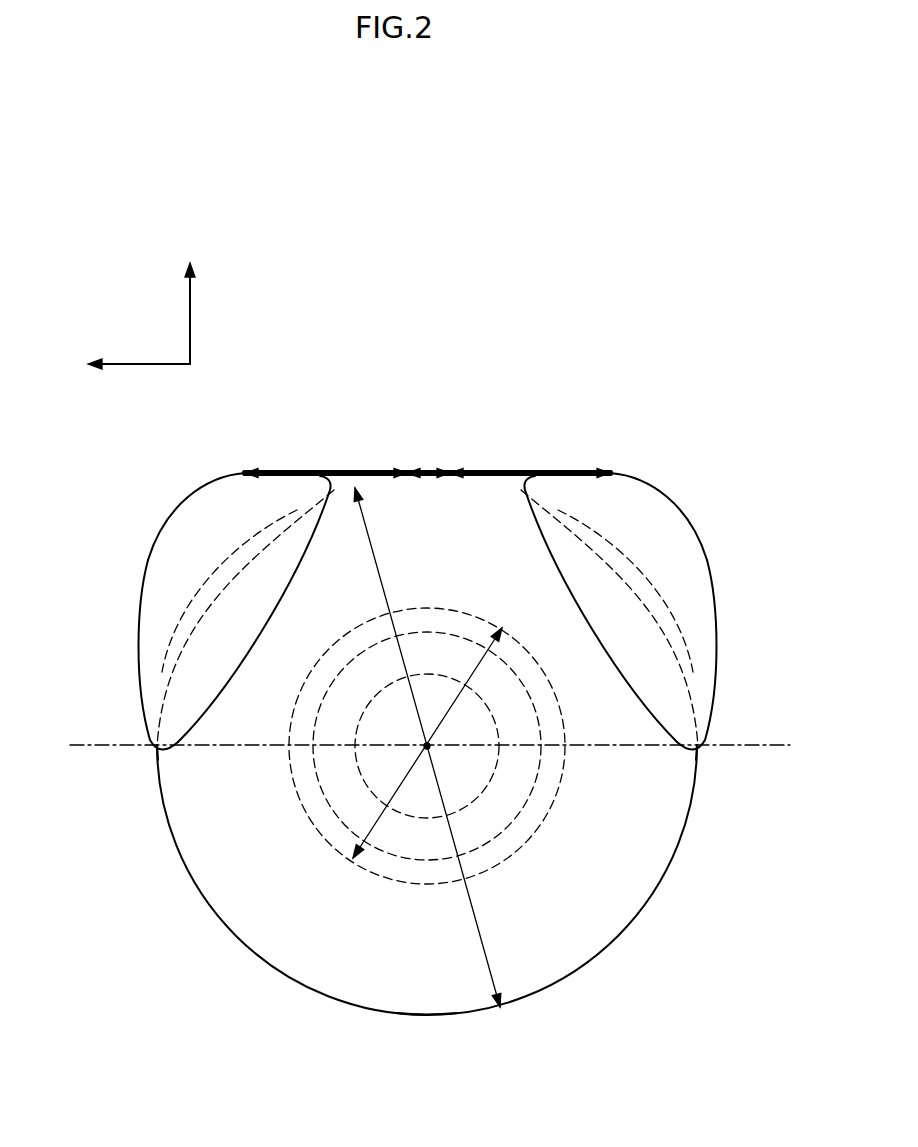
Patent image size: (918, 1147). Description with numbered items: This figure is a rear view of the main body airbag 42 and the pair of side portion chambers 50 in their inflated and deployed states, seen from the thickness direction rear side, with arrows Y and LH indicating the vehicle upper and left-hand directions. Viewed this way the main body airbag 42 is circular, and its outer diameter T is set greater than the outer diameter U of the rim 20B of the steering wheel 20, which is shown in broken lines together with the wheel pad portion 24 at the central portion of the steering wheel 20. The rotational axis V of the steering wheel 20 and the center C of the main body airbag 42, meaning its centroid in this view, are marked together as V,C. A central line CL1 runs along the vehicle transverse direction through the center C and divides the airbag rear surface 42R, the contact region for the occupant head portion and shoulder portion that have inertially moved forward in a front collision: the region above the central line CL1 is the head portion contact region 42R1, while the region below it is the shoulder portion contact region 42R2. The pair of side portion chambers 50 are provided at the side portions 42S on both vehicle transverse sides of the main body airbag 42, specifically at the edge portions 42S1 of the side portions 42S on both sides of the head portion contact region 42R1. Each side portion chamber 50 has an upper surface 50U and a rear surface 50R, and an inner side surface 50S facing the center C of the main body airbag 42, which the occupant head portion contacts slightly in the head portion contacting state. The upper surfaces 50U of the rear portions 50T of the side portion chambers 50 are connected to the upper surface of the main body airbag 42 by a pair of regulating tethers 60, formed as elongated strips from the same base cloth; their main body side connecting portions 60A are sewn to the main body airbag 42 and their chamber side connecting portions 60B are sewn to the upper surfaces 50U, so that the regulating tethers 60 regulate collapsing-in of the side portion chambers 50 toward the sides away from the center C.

The steering wheel 20 is at (380, 885).
The rim 20B is at (328, 830).
The wheel pad portion 24 is at (498, 773).
The main body airbag 42 is at (215, 920).
The airbag rear surface 42R is at (262, 937).
The head portion contact region 42R1 is at (433, 500).
The shoulder portion contact region 42R2 is at (417, 990).
The side portions 42S is at (162, 770).
The edge portions 42S1 is at (160, 680).
The side portion chambers 50 is at (165, 520).
The rear portions 50T is at (203, 480).
The rear surface 50R is at (165, 580).
The inner side surface 50S is at (280, 625).
The upper surface 50U is at (290, 468).
The regulating tethers 60 is at (345, 462).
The main body side connecting portions 60A is at (407, 468).
The chamber side connecting portions 60B is at (245, 468).
The outer diameter of the rim U is at (478, 663).
The outer diameter of the main body airbag T is at (478, 920).
The rotational axis and center V,C is at (425, 748).
The central line CL1 is at (404, 746).
The vehicle upper direction Y is at (187, 297).
The vehicle left-hand direction LH is at (117, 366).